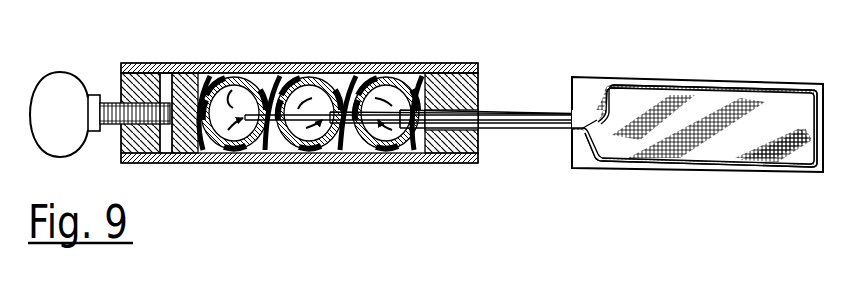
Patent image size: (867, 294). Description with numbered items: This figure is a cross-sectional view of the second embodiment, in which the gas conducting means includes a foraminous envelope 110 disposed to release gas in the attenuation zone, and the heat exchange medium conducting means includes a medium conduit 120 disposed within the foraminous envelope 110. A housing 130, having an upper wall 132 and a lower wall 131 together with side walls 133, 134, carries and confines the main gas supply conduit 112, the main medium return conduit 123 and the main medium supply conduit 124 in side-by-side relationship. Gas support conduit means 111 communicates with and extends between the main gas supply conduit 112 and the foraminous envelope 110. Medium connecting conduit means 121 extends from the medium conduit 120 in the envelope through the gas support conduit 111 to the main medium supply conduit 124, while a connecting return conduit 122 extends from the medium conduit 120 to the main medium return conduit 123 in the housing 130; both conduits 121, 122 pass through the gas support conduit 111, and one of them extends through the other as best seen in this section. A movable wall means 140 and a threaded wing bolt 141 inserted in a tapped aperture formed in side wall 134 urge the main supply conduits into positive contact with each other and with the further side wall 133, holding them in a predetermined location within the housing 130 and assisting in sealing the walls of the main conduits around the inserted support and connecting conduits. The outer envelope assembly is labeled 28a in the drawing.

The foraminous envelope 110 is at (790, 150).
The gas support conduit means 111 is at (524, 93).
The main gas supply conduit 112 is at (358, 140).
The medium conduit 120 is at (640, 57).
The medium connecting conduit means 121 is at (548, 123).
The connecting return conduit 122 is at (532, 120).
The main medium return conduit 123 is at (262, 153).
The main medium supply conduit 124 is at (203, 142).
The housing 130 is at (308, 62).
The lower wall 131 is at (338, 140).
The upper wall 132 is at (365, 72).
The side wall 133 is at (478, 152).
The side wall 134 is at (117, 78).
The movable wall means 140 is at (165, 78).
The threaded wing bolt 141 is at (76, 73).
The gauge 28a is at (708, 77).